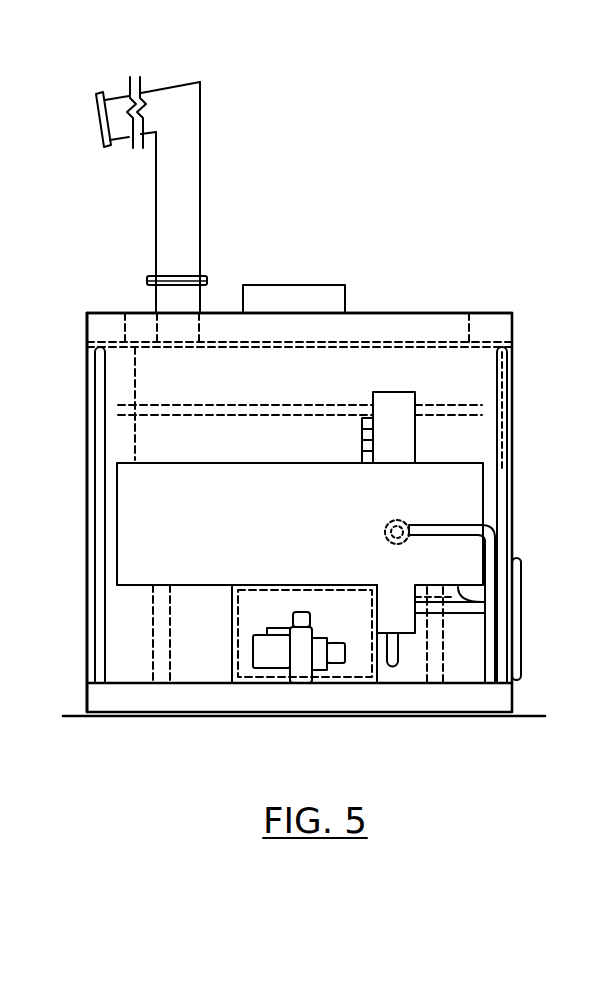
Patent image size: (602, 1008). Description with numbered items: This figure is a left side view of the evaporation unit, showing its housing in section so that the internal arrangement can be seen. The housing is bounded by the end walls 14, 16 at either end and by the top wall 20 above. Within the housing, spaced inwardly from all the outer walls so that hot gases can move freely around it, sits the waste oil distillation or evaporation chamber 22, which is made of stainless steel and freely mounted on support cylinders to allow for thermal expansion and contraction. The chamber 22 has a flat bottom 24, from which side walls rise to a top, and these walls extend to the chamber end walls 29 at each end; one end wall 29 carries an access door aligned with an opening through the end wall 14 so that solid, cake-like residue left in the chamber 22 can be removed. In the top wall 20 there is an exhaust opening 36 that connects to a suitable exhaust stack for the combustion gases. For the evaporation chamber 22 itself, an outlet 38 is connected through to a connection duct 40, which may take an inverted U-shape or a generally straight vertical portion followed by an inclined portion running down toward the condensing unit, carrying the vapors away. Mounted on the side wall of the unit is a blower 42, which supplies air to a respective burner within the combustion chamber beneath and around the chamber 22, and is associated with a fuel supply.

The end wall 14 is at (512, 516).
The end wall 16 is at (87, 557).
The top wall 20 is at (410, 313).
The waste oil distillation or evaporation chamber 22 is at (467, 407).
The flat bottom 24 is at (485, 602).
The chamber end wall 29 is at (123, 482).
The exhaust opening 36 is at (298, 285).
The outlet 38 is at (193, 298).
The connection duct 40 is at (200, 168).
The blower 42 is at (298, 673).